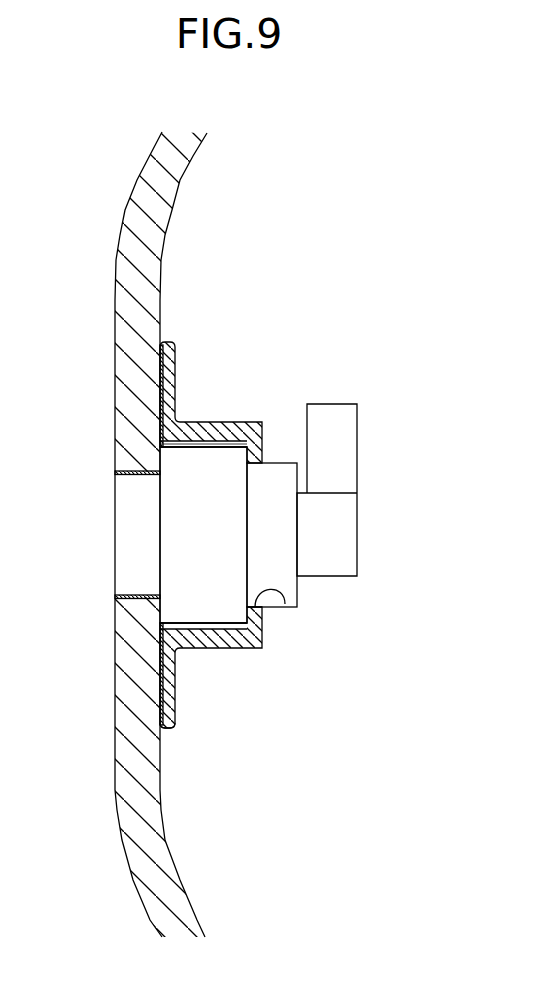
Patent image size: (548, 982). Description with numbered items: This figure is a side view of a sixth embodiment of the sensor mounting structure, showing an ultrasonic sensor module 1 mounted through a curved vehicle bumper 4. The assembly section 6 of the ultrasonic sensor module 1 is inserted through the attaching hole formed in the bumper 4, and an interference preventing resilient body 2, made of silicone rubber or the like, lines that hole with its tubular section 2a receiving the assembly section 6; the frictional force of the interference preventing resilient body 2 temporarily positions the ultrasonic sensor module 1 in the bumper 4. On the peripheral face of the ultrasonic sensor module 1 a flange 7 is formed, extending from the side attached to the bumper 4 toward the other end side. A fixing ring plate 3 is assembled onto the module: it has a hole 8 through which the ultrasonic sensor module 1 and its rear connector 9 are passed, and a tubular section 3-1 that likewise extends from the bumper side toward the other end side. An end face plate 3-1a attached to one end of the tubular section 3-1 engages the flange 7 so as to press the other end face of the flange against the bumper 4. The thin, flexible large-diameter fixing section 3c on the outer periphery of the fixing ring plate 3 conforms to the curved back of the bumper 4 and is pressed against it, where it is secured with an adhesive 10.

The ultrasonic sensor module 1 is at (285, 580).
The interference preventing resilient body 2 is at (117, 472).
The tubular section 2a is at (137, 597).
The fixing ring plate 3 is at (225, 422).
The tubular section 3-1 is at (227, 648).
The end face plate 3-1a is at (247, 457).
The large-diameter fixing section 3c is at (175, 352).
The bumper 4 is at (133, 343).
The assembly section 6 is at (127, 532).
The flange 7 is at (260, 610).
The hole 8 is at (281, 600).
The connector 9 is at (343, 445).
The adhesive 10 is at (162, 728).